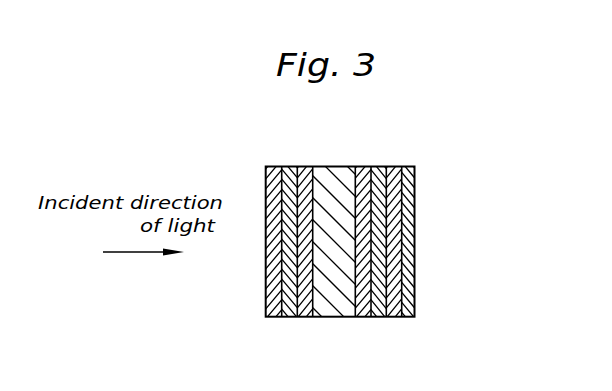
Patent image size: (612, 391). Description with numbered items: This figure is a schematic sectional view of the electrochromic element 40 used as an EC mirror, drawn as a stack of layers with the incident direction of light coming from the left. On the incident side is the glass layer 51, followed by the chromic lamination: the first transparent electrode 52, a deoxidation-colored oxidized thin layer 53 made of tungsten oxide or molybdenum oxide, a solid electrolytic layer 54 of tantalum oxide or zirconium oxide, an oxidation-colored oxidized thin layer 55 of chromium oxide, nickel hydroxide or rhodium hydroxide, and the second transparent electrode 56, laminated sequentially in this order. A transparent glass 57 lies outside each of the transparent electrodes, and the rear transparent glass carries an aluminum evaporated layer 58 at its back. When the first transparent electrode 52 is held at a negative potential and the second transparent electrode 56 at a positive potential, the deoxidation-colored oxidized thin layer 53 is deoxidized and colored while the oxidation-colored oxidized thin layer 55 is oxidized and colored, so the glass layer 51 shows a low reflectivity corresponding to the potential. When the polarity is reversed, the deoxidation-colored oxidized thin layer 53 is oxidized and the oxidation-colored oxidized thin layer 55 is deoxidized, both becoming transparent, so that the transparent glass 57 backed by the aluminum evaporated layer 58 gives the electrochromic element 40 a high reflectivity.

The electrochromic element 40 is at (420, 216).
The glass layer 51 is at (273, 312).
The first transparent electrode 52 is at (289, 313).
The deoxidation-colored oxidized thin layer 53 is at (302, 313).
The electrolytic layer 54 is at (333, 310).
The oxidation-colored oxidized thin layer 55 is at (358, 167).
The second transparent electrode 56 is at (378, 167).
The transparent glass 57 is at (392, 167).
The aluminum evaporated layer 58 is at (407, 178).